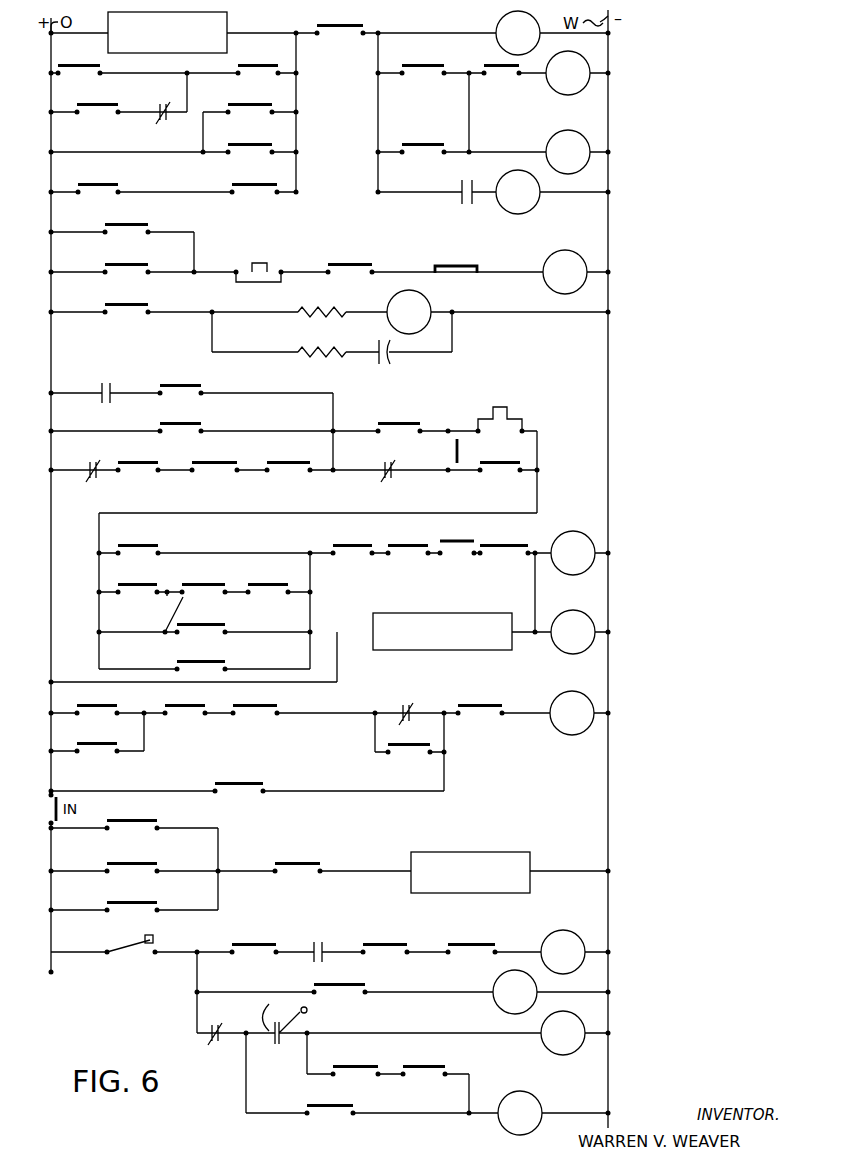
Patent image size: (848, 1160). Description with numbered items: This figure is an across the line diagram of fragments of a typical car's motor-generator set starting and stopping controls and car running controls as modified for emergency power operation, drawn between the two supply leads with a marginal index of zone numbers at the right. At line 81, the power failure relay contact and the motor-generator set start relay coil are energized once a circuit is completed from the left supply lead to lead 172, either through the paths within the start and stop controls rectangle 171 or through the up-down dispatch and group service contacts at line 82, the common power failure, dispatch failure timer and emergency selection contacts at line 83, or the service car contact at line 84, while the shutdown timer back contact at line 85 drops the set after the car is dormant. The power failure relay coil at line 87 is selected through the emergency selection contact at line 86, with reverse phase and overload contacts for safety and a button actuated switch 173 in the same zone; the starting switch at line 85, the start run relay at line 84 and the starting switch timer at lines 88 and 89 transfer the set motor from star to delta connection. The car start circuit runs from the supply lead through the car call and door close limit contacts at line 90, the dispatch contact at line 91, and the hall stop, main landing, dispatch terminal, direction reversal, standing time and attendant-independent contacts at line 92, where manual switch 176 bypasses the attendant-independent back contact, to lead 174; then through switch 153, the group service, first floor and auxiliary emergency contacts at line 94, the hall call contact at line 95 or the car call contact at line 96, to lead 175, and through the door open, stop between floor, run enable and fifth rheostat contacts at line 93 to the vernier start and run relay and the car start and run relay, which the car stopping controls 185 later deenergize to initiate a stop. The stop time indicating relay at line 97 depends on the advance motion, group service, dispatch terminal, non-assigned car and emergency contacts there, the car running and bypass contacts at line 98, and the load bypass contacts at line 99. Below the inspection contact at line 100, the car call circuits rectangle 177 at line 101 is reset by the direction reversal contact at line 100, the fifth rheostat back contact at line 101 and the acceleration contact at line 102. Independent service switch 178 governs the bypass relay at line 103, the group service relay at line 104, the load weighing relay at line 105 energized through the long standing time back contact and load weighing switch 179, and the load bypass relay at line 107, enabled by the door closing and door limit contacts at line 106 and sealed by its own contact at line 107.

The start and stop controls rectangle 171 is at (228, 22).
The lead 172 is at (297, 99).
The push button switch 173 is at (266, 263).
The lead 174 is at (99, 524).
The lead 175 is at (312, 572).
The manual switch 176 is at (508, 418).
The car call circuits rectangle 177 is at (487, 852).
The independent service switch 178 is at (127, 946).
The load weighing switch 179 is at (301, 1010).
The car stopping controls 185 is at (420, 613).
The switch 153 is at (173, 613).
The line 81 is at (371, 32).
The line 82 is at (357, 72).
The line 83 is at (345, 103).
The line 84 is at (406, 151).
The line 85 is at (385, 188).
The line 86 is at (345, 227).
The line 87 is at (369, 266).
The line 88 is at (374, 311).
The line 89 is at (426, 352).
The line 90 is at (345, 385).
The line 91 is at (345, 416).
The line 92 is at (345, 461).
The line 93 is at (382, 549).
The line 94 is at (369, 587).
The line 95 is at (376, 633).
The line 96 is at (345, 665).
The line 97 is at (365, 709).
The line 98 is at (345, 746).
The line 99 is at (345, 786).
The line 100 is at (350, 825).
The line 101 is at (350, 859).
The line 102 is at (350, 906).
The line 103 is at (376, 945).
The line 104 is at (508, 994).
The line 105 is at (438, 1025).
The line 106 is at (479, 1069).
The line 107 is at (525, 1111).